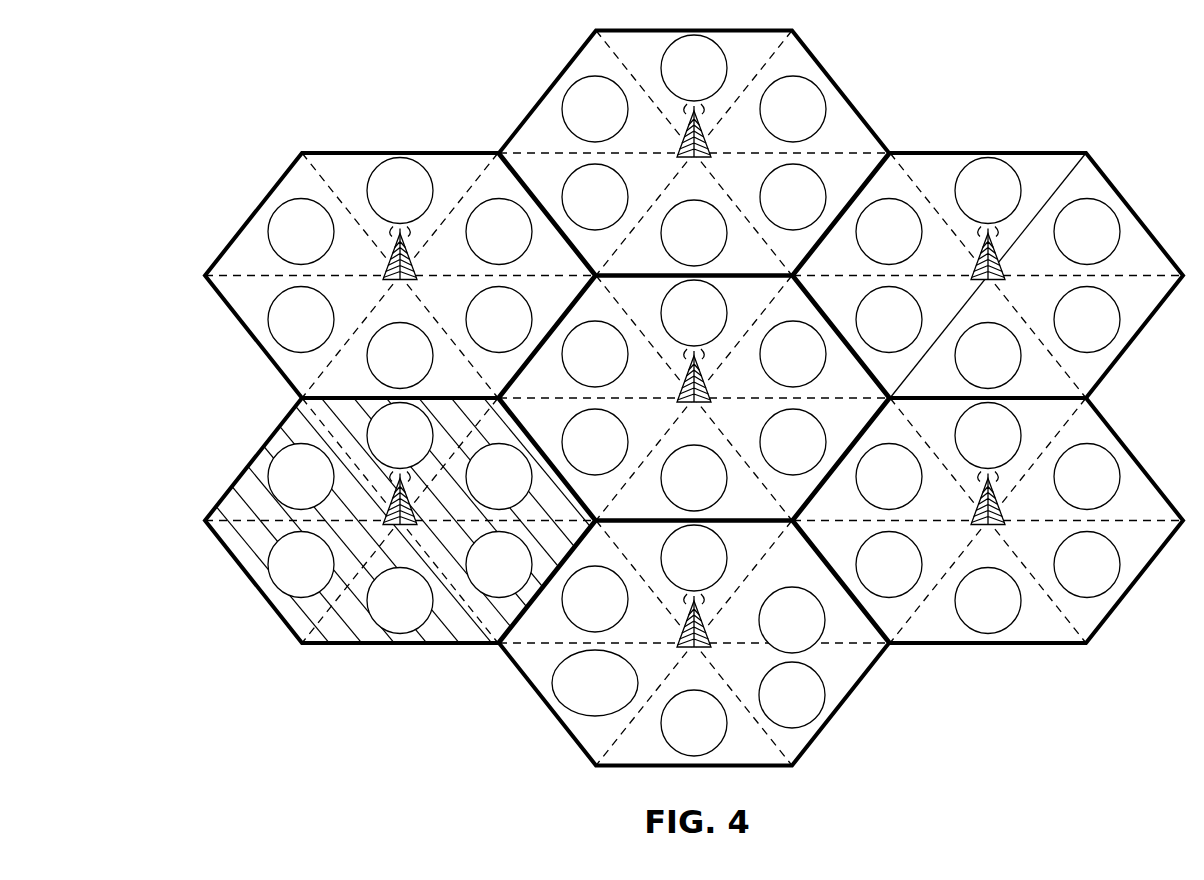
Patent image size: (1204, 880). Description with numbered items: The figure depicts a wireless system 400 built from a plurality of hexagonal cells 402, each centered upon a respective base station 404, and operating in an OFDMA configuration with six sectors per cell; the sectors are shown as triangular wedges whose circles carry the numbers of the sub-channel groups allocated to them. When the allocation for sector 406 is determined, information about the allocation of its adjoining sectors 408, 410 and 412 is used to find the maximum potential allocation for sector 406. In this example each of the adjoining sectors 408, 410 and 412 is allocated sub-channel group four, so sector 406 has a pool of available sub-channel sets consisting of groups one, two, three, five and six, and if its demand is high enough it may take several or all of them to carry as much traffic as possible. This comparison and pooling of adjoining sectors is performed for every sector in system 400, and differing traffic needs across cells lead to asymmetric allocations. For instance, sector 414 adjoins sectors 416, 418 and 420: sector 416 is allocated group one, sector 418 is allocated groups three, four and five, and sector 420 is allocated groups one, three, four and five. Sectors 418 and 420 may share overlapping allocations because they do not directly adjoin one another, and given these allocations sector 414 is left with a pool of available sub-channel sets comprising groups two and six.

The wireless system 400 is at (277, 68).
The cell 402 is at (420, 133).
The base station 404 is at (1005, 263).
The sector 406 is at (601, 305).
The adjoining sector 408 is at (545, 423).
The adjoining sector 410 is at (758, 305).
The adjoining sector 412 is at (436, 302).
The sector 414 is at (537, 668).
The adjoining sector 416 is at (487, 605).
The adjoining sector 418 is at (758, 543).
The adjoining sector 420 is at (587, 727).